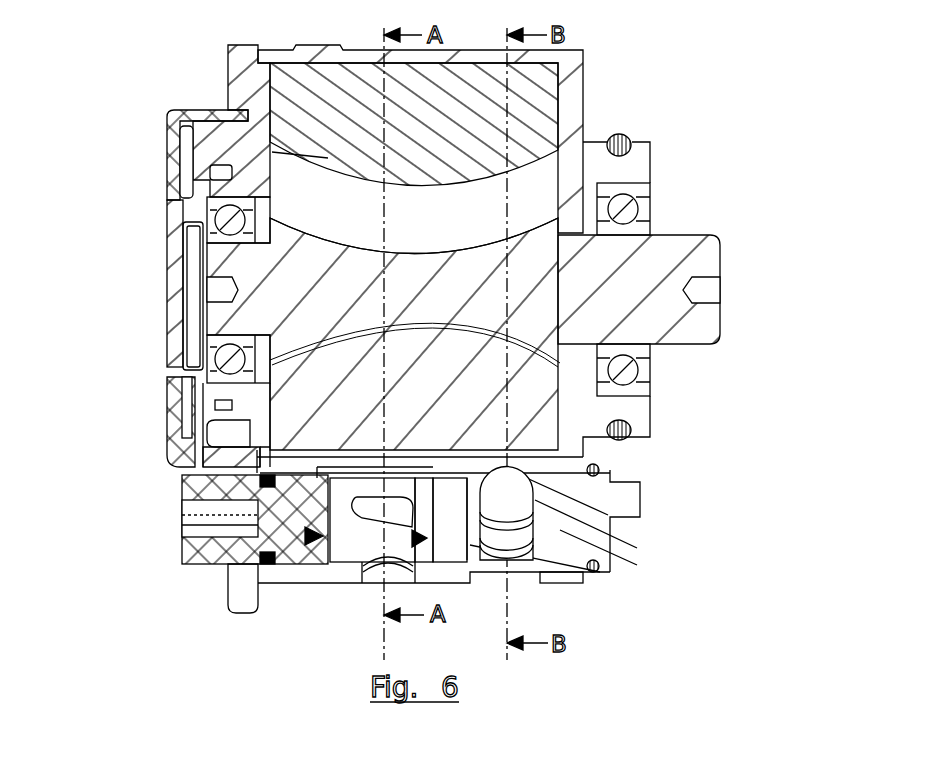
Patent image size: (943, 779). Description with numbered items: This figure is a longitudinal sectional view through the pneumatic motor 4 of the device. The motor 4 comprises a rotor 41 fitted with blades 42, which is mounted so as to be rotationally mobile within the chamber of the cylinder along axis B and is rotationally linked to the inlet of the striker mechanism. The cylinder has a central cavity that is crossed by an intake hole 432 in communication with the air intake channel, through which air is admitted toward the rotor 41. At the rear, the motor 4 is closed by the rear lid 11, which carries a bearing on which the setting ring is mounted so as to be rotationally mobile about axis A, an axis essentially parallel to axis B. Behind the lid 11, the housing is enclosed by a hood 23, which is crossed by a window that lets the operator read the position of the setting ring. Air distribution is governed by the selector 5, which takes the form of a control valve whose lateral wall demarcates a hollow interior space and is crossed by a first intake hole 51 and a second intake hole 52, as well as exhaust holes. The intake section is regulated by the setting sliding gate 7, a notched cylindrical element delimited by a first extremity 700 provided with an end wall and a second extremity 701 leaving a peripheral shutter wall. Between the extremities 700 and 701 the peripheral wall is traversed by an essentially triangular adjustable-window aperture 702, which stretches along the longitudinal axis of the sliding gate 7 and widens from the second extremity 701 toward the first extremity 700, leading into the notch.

The rear lid 11 is at (248, 73).
The pneumatic motor 4 is at (652, 168).
The rotor 41 is at (710, 252).
The blades 42 is at (330, 158).
The hood 23 is at (173, 440).
The setting sliding gate 7 is at (180, 493).
The first extremity 700 is at (262, 577).
The second extremity 701 is at (186, 562).
The adjustable-window aperture 702 is at (304, 535).
The selector 5 is at (585, 530).
The first intake hole 51 is at (378, 562).
The second intake hole 52 is at (468, 565).
The intake hole 432 is at (390, 577).